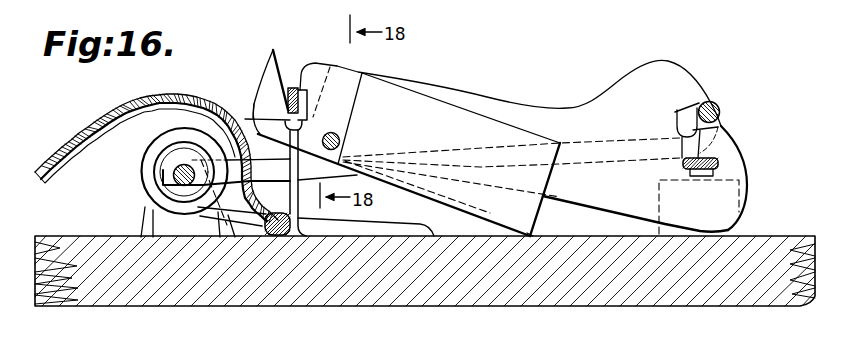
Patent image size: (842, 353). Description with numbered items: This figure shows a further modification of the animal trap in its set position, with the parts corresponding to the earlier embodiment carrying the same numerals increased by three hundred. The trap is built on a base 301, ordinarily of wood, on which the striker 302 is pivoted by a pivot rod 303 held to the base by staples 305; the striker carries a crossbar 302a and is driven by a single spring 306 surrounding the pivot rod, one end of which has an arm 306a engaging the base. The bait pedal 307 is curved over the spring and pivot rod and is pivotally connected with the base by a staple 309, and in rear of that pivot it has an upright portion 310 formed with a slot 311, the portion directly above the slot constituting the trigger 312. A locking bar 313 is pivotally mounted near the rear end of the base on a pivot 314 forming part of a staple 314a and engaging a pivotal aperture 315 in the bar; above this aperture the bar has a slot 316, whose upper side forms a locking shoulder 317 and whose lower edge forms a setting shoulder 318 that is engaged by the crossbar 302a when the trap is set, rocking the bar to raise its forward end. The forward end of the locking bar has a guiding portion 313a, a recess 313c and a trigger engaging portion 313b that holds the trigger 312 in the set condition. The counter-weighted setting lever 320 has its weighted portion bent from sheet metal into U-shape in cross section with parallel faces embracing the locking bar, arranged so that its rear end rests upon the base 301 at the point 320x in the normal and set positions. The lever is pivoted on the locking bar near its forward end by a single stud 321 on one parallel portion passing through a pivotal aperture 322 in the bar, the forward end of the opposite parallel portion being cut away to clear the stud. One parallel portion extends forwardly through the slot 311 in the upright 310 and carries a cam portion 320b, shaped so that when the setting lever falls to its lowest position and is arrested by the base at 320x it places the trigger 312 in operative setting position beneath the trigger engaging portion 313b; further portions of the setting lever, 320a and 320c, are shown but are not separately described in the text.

The base 301 is at (112, 306).
The striker 302 is at (241, 172).
The crossbar of the striker 302a is at (720, 108).
The pivot rod 303 is at (172, 174).
The staples 305 is at (150, 207).
The spring 306 is at (150, 147).
The spring arm 306a is at (389, 231).
The bait pedal 307 is at (156, 158).
The staple 309 is at (214, 223).
The upright portion of the bait pedal 310 is at (287, 237).
The slot 311 is at (287, 200).
The trigger 312 is at (290, 88).
The locking bar 313 is at (486, 103).
The guiding portion 313a is at (262, 121).
The trigger engaging portion 313b is at (306, 68).
The recess 313c is at (255, 98).
The pivot 314 is at (718, 162).
The staple 314a is at (744, 223).
The pivotal aperture 315 is at (719, 168).
The slot 316 is at (684, 122).
The locking shoulder 317 is at (700, 103).
The setting shoulder 318 is at (722, 126).
The counter-weighted setting lever 320 is at (405, 102).
The lever 320a is at (267, 84).
The cam portion 320b is at (260, 71).
The slot 320c is at (313, 116).
The rear end rest point of the setting lever 320x is at (530, 236).
The stud 321 is at (340, 143).
The pivotal aperture 322 is at (340, 134).